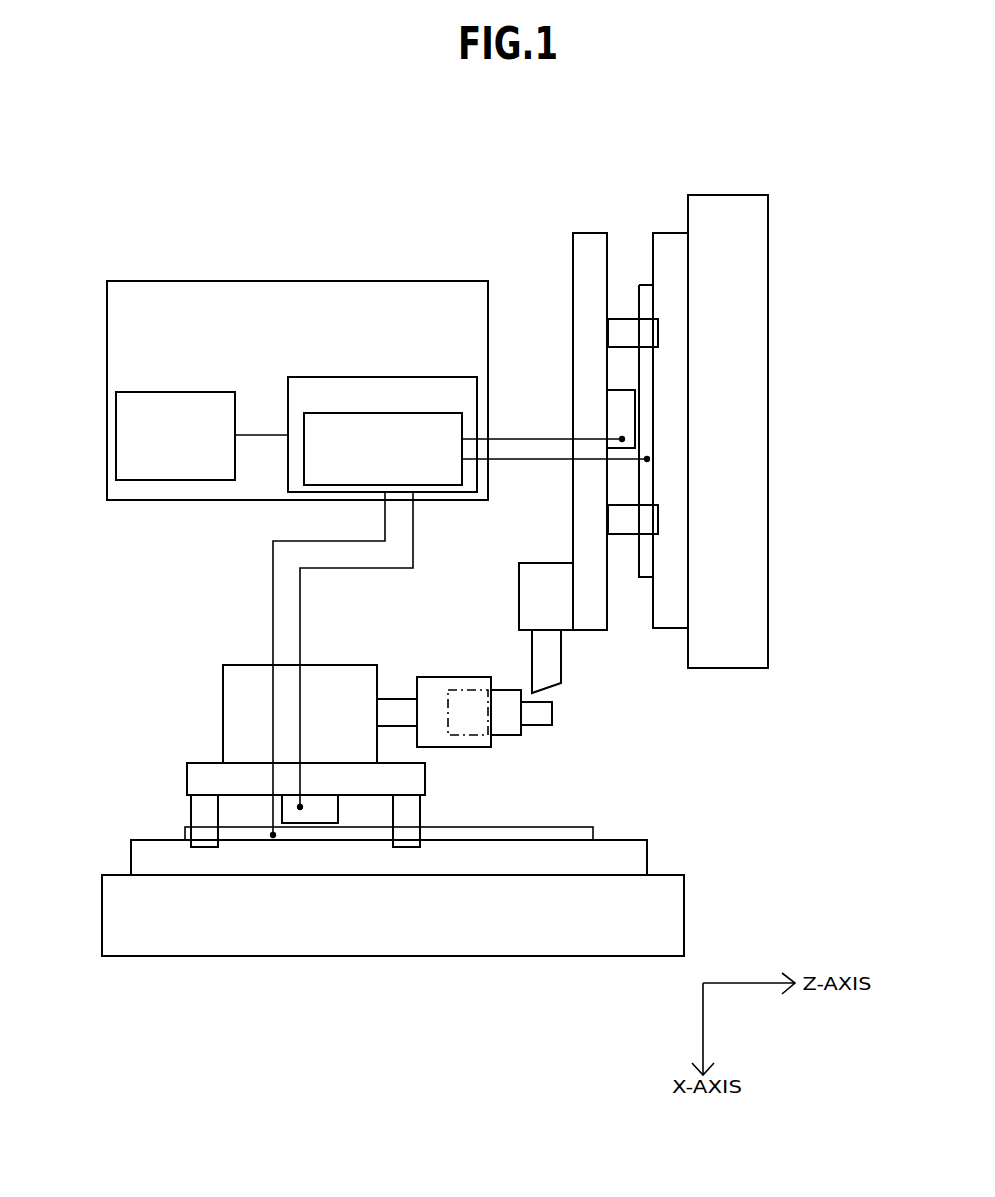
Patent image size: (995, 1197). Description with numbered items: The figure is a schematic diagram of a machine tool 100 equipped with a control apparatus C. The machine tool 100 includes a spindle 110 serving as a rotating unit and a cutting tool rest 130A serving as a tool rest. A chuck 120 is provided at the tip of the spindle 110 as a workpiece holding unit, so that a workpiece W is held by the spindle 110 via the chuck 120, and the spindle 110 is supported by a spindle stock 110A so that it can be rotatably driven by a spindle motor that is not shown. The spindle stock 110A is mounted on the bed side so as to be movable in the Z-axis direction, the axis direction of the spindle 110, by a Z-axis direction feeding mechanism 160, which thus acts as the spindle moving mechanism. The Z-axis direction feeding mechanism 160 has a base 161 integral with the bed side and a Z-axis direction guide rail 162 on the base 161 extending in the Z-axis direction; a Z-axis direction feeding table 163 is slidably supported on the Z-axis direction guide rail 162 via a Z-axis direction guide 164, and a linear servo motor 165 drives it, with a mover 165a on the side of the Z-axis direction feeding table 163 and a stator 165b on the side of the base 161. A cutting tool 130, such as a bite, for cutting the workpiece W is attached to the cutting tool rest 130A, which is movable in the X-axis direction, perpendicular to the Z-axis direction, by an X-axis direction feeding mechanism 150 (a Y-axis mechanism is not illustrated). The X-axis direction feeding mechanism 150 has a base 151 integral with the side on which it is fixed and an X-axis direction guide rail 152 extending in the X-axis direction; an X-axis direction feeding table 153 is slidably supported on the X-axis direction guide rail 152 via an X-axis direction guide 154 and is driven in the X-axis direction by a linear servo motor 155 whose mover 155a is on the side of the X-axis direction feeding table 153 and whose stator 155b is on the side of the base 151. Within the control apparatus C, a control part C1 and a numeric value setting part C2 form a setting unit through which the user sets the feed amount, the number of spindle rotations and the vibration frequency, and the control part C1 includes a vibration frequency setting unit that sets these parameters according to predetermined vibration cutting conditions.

The machine tool 100 is at (196, 198).
The control apparatus C is at (284, 281).
The control part C1 is at (357, 377).
The numeric value setting part C2 is at (178, 392).
The spindle 110 is at (398, 708).
The spindle stock 110A is at (243, 695).
The chuck 120 is at (453, 680).
The workpiece W is at (538, 710).
The cutting tool 130 is at (542, 655).
The cutting tool rest 130A is at (545, 582).
The X-axis direction feeding mechanism 150 is at (768, 114).
The base 151 is at (747, 210).
The X-axis direction guide rail 152 is at (668, 248).
The X-axis direction feeding table 153 is at (585, 307).
The X-axis direction guide 154 is at (624, 332).
The linear servo motor 155 is at (840, 247).
The mover 155a is at (623, 401).
The stator 155b is at (647, 423).
The Z-axis direction feeding mechanism 160 is at (168, 1015).
The base 161 is at (532, 933).
The Z-axis direction guide rail 162 is at (638, 858).
The Z-axis direction feeding table 163 is at (210, 772).
The Z-axis direction guide 164 is at (207, 820).
The linear servo motor 165 is at (482, 1003).
The mover 165a is at (322, 808).
The stator 165b is at (372, 832).